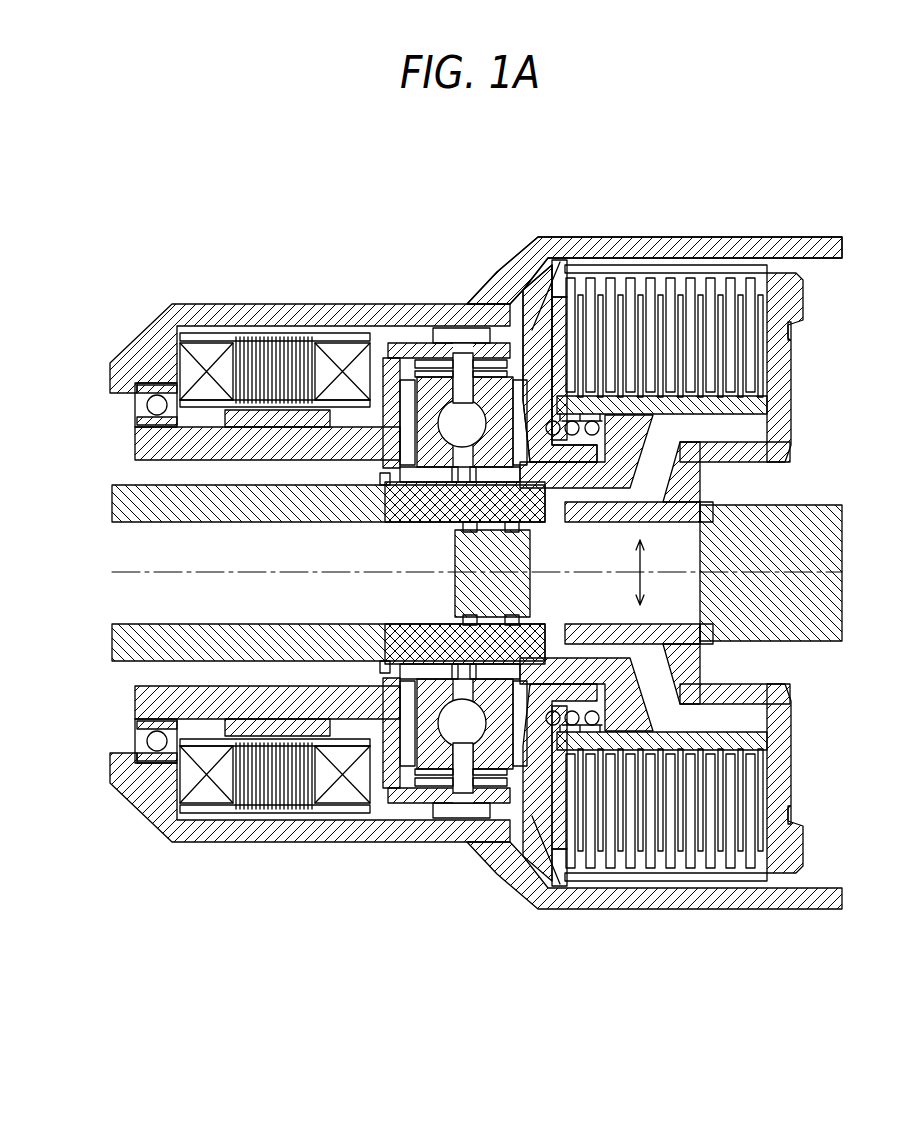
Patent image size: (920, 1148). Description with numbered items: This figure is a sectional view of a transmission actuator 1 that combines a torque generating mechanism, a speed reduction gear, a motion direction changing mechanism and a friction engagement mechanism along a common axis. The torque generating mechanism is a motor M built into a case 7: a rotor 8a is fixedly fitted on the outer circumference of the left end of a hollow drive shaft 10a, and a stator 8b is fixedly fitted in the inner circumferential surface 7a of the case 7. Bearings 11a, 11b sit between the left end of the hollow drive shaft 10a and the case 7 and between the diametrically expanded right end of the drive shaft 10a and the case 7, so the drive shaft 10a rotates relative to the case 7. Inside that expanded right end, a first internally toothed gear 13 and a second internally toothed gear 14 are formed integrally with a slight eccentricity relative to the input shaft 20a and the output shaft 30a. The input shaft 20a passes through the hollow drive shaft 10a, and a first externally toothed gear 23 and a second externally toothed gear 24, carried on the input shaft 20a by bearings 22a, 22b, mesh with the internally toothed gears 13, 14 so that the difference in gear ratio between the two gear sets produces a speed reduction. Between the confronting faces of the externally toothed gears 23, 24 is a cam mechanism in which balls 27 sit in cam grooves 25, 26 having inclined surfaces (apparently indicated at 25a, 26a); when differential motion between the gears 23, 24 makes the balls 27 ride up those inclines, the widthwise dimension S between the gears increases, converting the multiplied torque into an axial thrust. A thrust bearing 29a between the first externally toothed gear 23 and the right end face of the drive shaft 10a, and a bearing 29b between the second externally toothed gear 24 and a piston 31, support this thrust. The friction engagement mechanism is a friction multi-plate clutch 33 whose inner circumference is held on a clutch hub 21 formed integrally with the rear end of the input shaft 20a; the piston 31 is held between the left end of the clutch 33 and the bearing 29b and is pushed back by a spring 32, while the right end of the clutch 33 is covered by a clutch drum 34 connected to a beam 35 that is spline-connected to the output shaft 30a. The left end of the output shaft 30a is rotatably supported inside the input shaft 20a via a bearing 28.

The transmission actuator 1 is at (486, 267).
The case 7 is at (330, 312).
The inner circumferential surface 7a is at (353, 312).
The rotor 8a is at (279, 418).
The stator 8b is at (263, 320).
The motor M is at (236, 234).
The hollow drive shaft 10a is at (135, 450).
The bearing 11a is at (150, 360).
The bearing 11b is at (497, 272).
The first internally toothed gear 13 is at (418, 375).
The second internally toothed gear 14 is at (527, 330).
The input shaft 20a is at (165, 487).
The clutch hub 21 is at (643, 573).
The bearing 22a is at (420, 470).
The bearing 22b is at (455, 535).
The first externally toothed gear 23 is at (440, 480).
The second externally toothed gear 24 is at (462, 470).
The cam groove 25 is at (552, 360).
The piston chamber 25a is at (560, 330).
The cam groove 26 is at (500, 378).
The seal ring 26a is at (430, 380).
The ball 27 is at (413, 362).
The bearing 28 is at (639, 573).
The thrust bearing 29a is at (395, 470).
The bearing 29b is at (570, 340).
The output shaft 30a is at (780, 510).
The piston 31 is at (592, 420).
The spring 32 is at (718, 322).
The friction multi-plate clutch 33 is at (800, 270).
The clutch drum 34 is at (797, 345).
The beam 35 is at (775, 468).
The widthwise dimension S is at (433, 505).